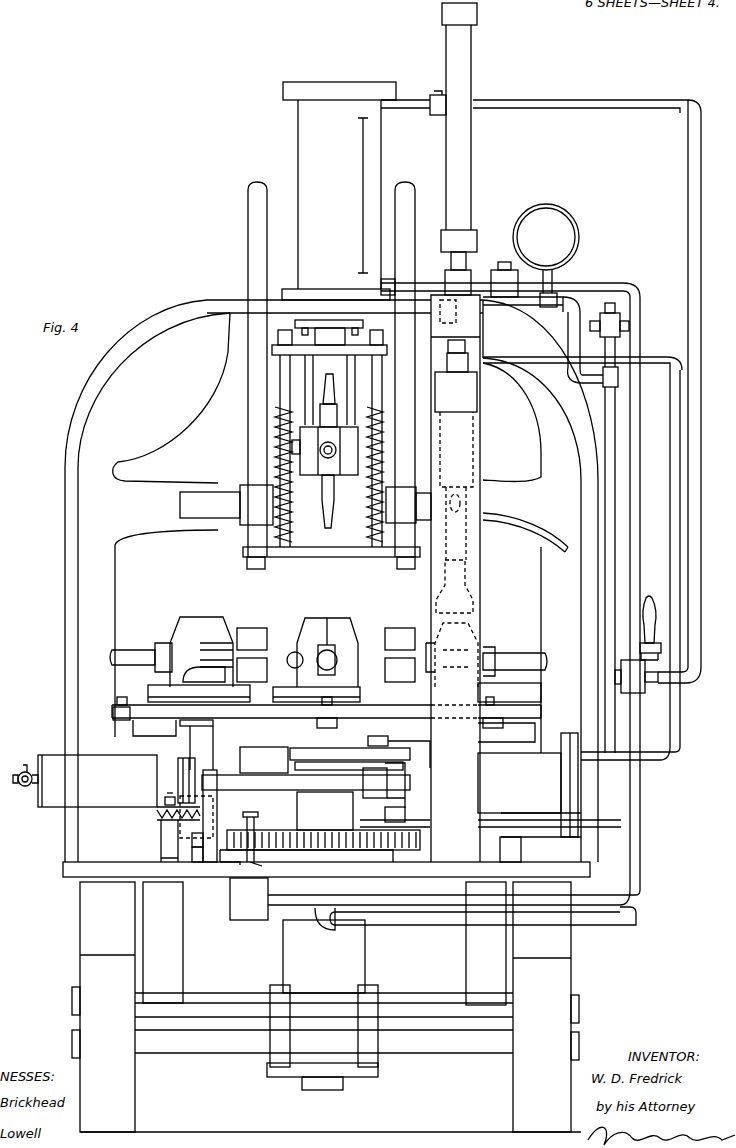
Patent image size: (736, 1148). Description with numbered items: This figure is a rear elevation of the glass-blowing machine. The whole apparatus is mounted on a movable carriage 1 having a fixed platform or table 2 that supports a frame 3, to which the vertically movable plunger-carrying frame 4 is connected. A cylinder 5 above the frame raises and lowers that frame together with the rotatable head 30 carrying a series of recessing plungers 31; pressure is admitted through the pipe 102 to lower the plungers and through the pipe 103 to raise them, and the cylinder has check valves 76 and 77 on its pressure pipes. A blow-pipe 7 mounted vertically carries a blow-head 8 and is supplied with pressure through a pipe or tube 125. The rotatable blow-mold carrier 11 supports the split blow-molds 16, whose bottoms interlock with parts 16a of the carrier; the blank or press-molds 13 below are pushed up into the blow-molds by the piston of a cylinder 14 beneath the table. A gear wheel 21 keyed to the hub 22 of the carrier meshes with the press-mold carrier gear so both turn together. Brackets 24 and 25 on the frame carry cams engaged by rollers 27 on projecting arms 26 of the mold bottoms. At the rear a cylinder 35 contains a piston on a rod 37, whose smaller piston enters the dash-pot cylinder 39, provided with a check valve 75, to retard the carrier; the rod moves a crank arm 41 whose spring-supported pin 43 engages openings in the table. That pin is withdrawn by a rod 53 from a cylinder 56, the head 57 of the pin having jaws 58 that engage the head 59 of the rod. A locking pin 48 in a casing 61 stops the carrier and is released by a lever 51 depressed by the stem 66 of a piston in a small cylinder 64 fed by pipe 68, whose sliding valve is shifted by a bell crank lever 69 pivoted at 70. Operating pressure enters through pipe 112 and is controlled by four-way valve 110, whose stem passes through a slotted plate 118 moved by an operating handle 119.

The carriage 1 is at (326, 1007).
The fixed platform or table 2 is at (326, 870).
The frame 3 is at (331, 522).
The plunger-carrying frame 4 is at (329, 433).
The cylinder 5 is at (339, 191).
The blow-pipe 7 is at (482, 556).
The blow-head 8 is at (470, 590).
The rotatable blow-mold carrier 11 is at (326, 711).
The blank or press-mold 13 is at (264, 760).
The cylinder 14 is at (324, 999).
The blow-mold 16 is at (489, 637).
The carrier parts 16a is at (548, 686).
The gear wheel 21 is at (322, 847).
The hub 22 is at (325, 811).
The bracket 24 is at (151, 736).
The bracket 25 is at (506, 737).
The projecting arms 26 is at (294, 704).
The anti-friction rollers 27 is at (113, 713).
The head 30 is at (325, 451).
The recessing plungers 31 is at (330, 360).
The cylinder 35 is at (549, 797).
The rod 37 is at (306, 783).
The cup or cylinder 39 is at (97, 781).
The crank arm 41 is at (350, 758).
The pin 43 is at (396, 744).
The locking pin 48 is at (190, 726).
The lever 51 is at (208, 849).
The rod 53 is at (248, 870).
The cylinder 56 is at (249, 899).
The head 57 is at (395, 795).
The jaws 58 is at (405, 814).
The head 59 is at (253, 828).
The casing 61 is at (198, 794).
The small cylinder 64 is at (200, 812).
The stem 66 is at (198, 834).
The pipe 68 is at (187, 780).
The bell crank lever 69 is at (157, 813).
The pivot 70 is at (170, 792).
The check valve 75 is at (20, 768).
The check valve 76 is at (437, 112).
The check valve 77 is at (496, 277).
The pipe 102 is at (705, 289).
The pipe 103 is at (634, 505).
The four-way valve 110 is at (641, 682).
The pipe 112 is at (618, 312).
The plate 118 is at (662, 648).
The operating handle 119 is at (652, 613).
The pipe or tube 125 is at (525, 525).